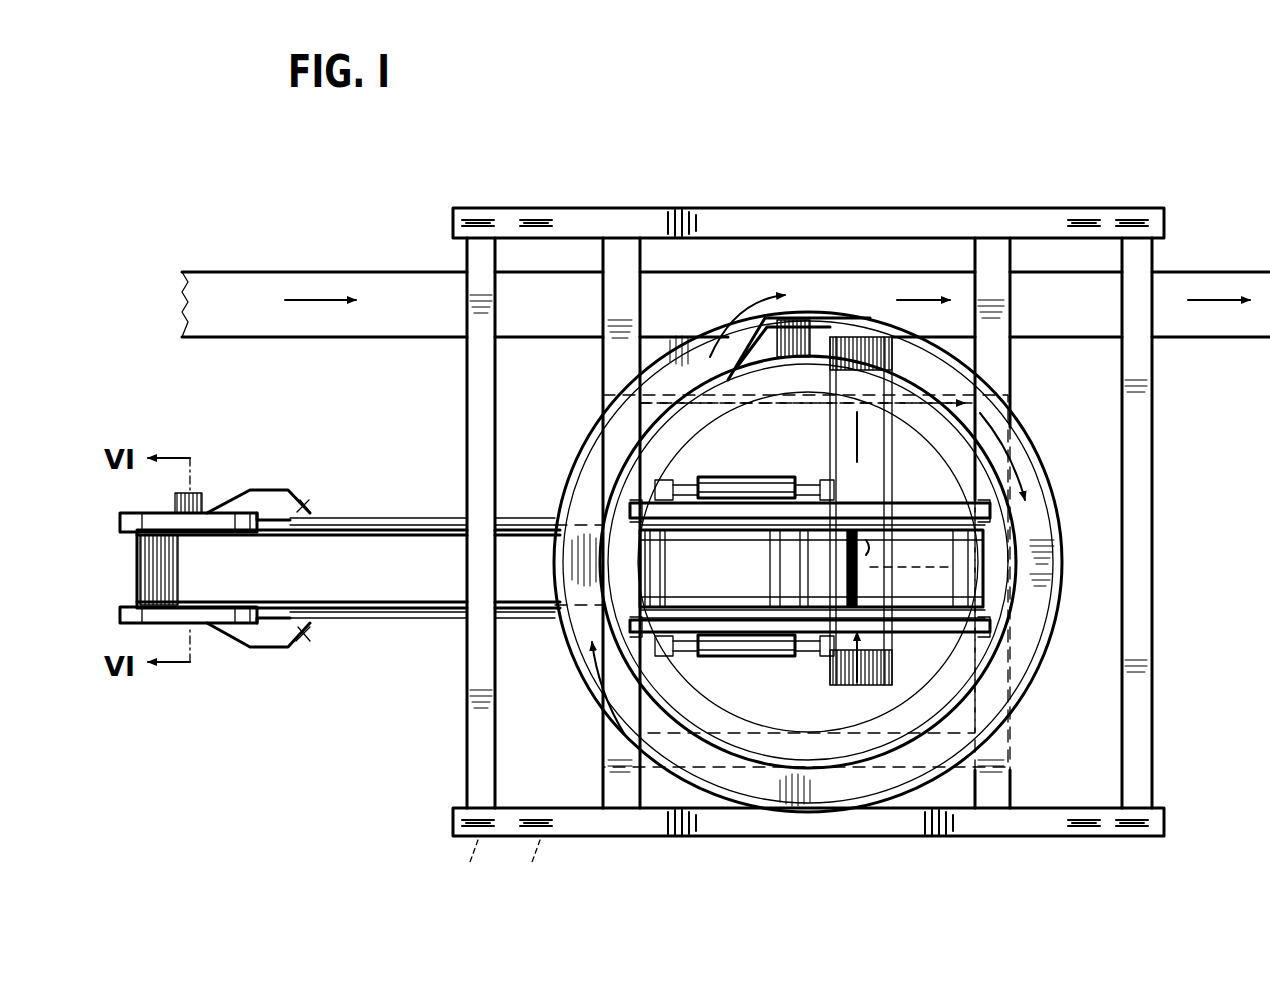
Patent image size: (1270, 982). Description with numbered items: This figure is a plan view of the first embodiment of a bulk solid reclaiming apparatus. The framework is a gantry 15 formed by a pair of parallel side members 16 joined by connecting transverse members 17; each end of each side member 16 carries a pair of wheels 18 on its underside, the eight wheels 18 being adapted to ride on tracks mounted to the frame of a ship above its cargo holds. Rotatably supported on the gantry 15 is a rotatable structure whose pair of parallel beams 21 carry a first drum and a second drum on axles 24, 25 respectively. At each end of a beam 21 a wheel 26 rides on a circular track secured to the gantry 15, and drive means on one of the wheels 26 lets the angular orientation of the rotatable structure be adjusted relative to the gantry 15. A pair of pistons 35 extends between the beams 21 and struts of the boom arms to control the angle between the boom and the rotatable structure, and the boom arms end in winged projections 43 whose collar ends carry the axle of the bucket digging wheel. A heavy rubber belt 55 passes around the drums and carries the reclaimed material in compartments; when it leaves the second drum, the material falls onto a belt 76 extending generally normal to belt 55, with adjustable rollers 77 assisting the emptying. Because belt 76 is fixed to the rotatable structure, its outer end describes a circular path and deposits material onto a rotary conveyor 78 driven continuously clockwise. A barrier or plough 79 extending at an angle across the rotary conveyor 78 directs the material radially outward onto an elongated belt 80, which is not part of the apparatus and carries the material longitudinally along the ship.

The gantry 15 is at (802, 525).
The side members 16 is at (908, 216).
The transverse members 17 is at (467, 756).
The wheels 18 is at (512, 867).
The beams 21 is at (908, 622).
The axle 24 is at (811, 520).
The axle 25 is at (918, 506).
The wheel 26 is at (822, 562).
The pistons 35 is at (775, 476).
The winged projections 43 is at (305, 505).
The belt 55 is at (398, 540).
The belt 76 is at (850, 335).
The rollers 77 is at (868, 578).
The rotary conveyor 78 is at (1020, 655).
The barrier (plough) 79 is at (712, 355).
The elongated belt 80 is at (1206, 283).